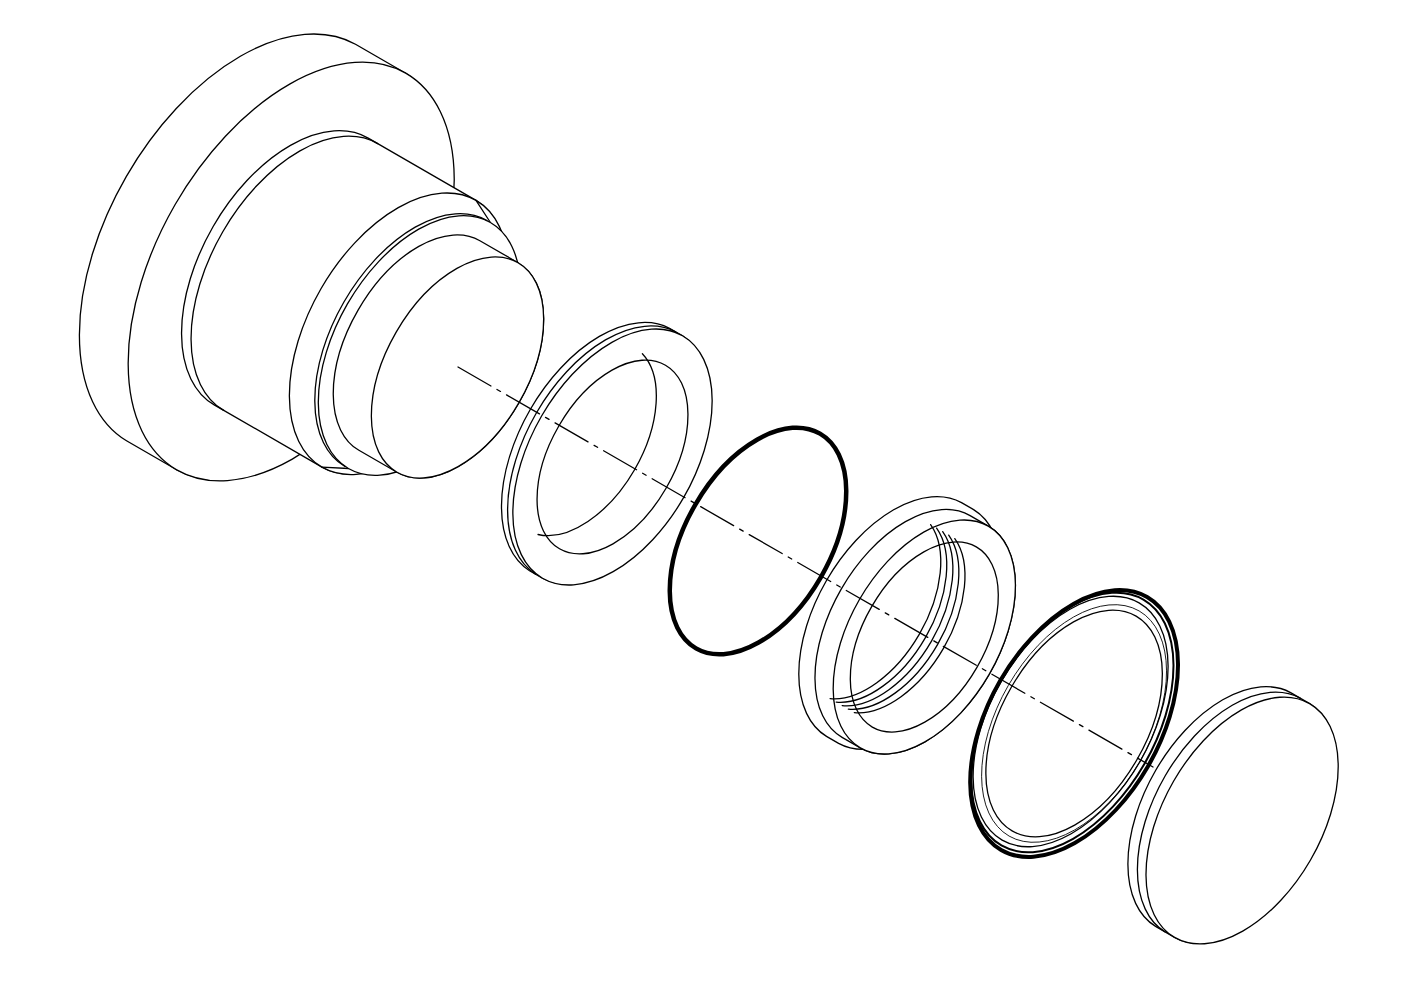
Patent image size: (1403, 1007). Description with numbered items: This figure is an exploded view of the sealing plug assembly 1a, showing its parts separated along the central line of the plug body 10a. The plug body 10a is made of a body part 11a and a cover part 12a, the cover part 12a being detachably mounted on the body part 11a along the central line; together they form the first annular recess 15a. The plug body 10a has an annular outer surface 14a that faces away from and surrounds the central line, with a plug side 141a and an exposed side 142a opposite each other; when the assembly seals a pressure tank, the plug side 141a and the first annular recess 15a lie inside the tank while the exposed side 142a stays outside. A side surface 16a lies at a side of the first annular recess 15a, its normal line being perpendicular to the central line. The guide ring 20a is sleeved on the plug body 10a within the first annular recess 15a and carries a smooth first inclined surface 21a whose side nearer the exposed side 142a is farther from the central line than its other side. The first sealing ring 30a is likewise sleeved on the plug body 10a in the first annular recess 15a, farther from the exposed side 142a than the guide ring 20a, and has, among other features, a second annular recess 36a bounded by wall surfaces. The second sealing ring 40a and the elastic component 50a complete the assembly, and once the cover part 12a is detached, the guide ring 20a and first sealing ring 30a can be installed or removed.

The sealing plug assembly 1a is at (84, 63).
The plug body 10a is at (355, 298).
The body part 11a is at (307, 271).
The exposed side 142a is at (412, 61).
The annular outer surface 14a is at (260, 352).
The first annular recess 15a is at (370, 480).
The side surface 16a is at (454, 250).
The guide ring 20a is at (613, 481).
The first inclined surface 21a is at (568, 595).
The second sealing ring 40a is at (824, 432).
The first sealing ring 30a is at (928, 647).
The second annular recess 36a is at (854, 764).
The elastic component 50a is at (1118, 592).
The cover part 12a is at (1211, 803).
The plug side 141a is at (1132, 932).